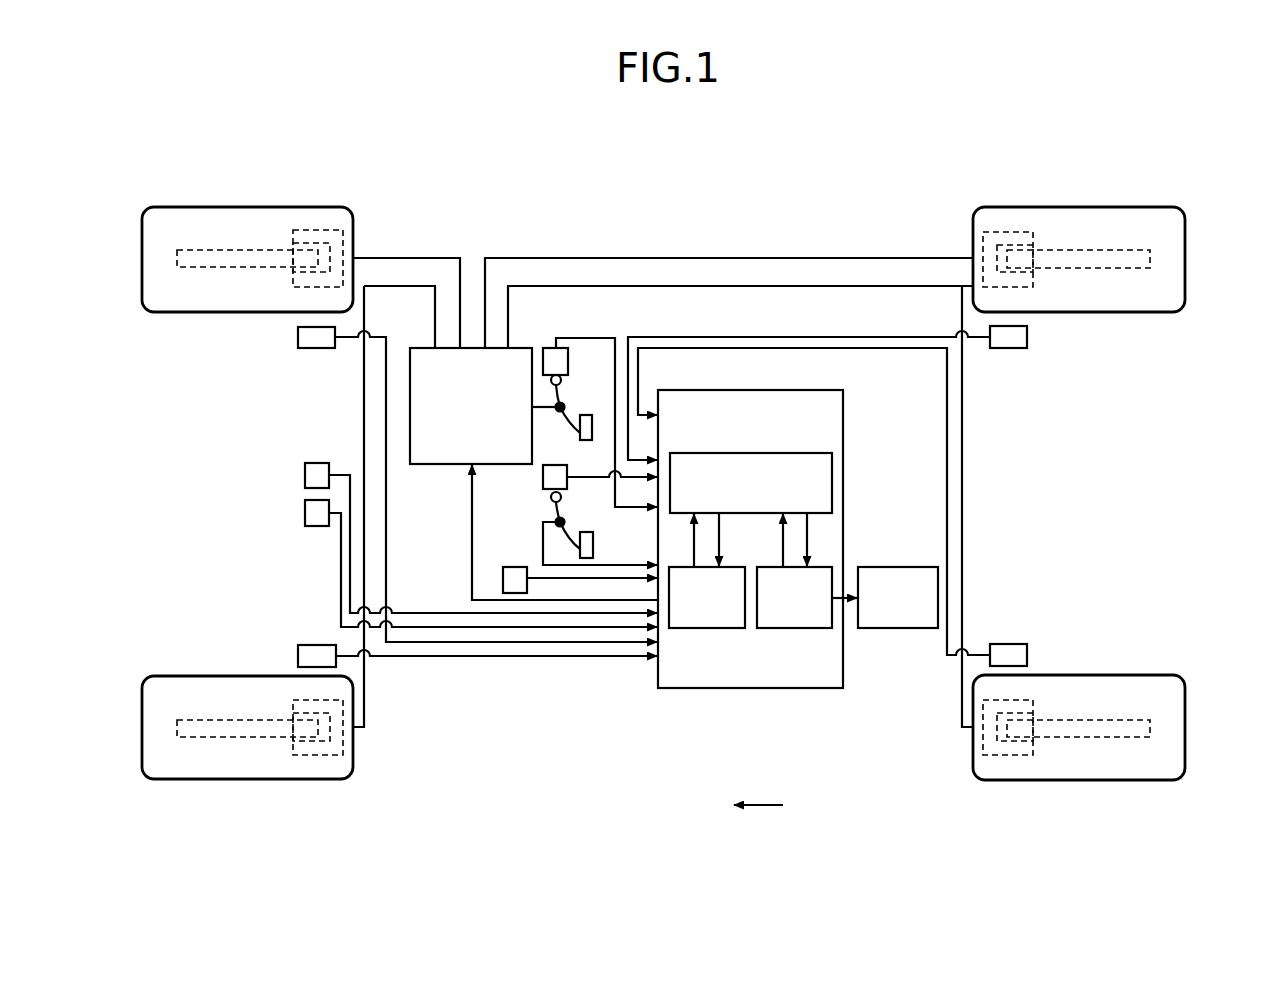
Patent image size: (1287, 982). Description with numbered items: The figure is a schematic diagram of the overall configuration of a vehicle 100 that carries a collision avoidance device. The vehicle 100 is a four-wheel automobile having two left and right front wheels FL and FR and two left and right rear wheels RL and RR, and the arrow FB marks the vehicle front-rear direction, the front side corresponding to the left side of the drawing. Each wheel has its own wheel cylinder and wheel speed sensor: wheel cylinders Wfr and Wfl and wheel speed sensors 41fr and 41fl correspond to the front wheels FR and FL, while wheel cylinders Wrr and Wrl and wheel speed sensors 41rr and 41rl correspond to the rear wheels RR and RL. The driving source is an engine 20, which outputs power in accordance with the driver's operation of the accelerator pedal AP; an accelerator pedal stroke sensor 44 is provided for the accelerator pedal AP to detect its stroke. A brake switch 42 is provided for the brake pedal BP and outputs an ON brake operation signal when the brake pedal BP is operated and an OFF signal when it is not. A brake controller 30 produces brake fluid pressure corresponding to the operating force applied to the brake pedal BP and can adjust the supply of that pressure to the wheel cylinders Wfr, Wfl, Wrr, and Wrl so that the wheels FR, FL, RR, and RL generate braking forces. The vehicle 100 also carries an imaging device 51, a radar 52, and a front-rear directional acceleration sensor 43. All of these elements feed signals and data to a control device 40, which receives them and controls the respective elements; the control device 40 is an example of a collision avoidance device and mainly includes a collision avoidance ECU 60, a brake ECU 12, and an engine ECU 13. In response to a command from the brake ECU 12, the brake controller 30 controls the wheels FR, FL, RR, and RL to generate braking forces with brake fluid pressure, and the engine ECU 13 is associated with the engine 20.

The vehicle 100 is at (707, 185).
The brake controller 30 is at (520, 348).
The brake switch 42 is at (568, 360).
The brake pedal BP is at (570, 413).
The accelerator pedal stroke sensor 44 is at (542, 479).
The accelerator pedal AP is at (570, 533).
The front-rear directional acceleration sensor 43 is at (513, 567).
The control device 40 is at (790, 390).
The collision avoidance electronic control unit 60 is at (787, 453).
The brake electronic control unit 12 is at (706, 628).
The engine ECU 13 is at (791, 628).
The engine 20 is at (892, 567).
The wheel speed sensor 41fr is at (298, 337).
The wheel speed sensor 41fl is at (298, 656).
The wheel speed sensor 41rr is at (1027, 337).
The wheel speed sensor 41rl is at (1027, 655).
The imaging device 51 is at (305, 475).
The radar 52 is at (305, 512).
The front right wheel FR is at (244, 207).
The front left wheel FL is at (242, 779).
The rear right wheel RR is at (1081, 207).
The rear left wheel RL is at (1081, 780).
The wheel cylinder Wfr is at (314, 230).
The wheel cylinder Wfl is at (313, 755).
The wheel cylinder Wrr is at (1010, 232).
The wheel cylinder Wrl is at (1008, 755).
The vehicle front-rear direction arrow FB is at (758, 819).